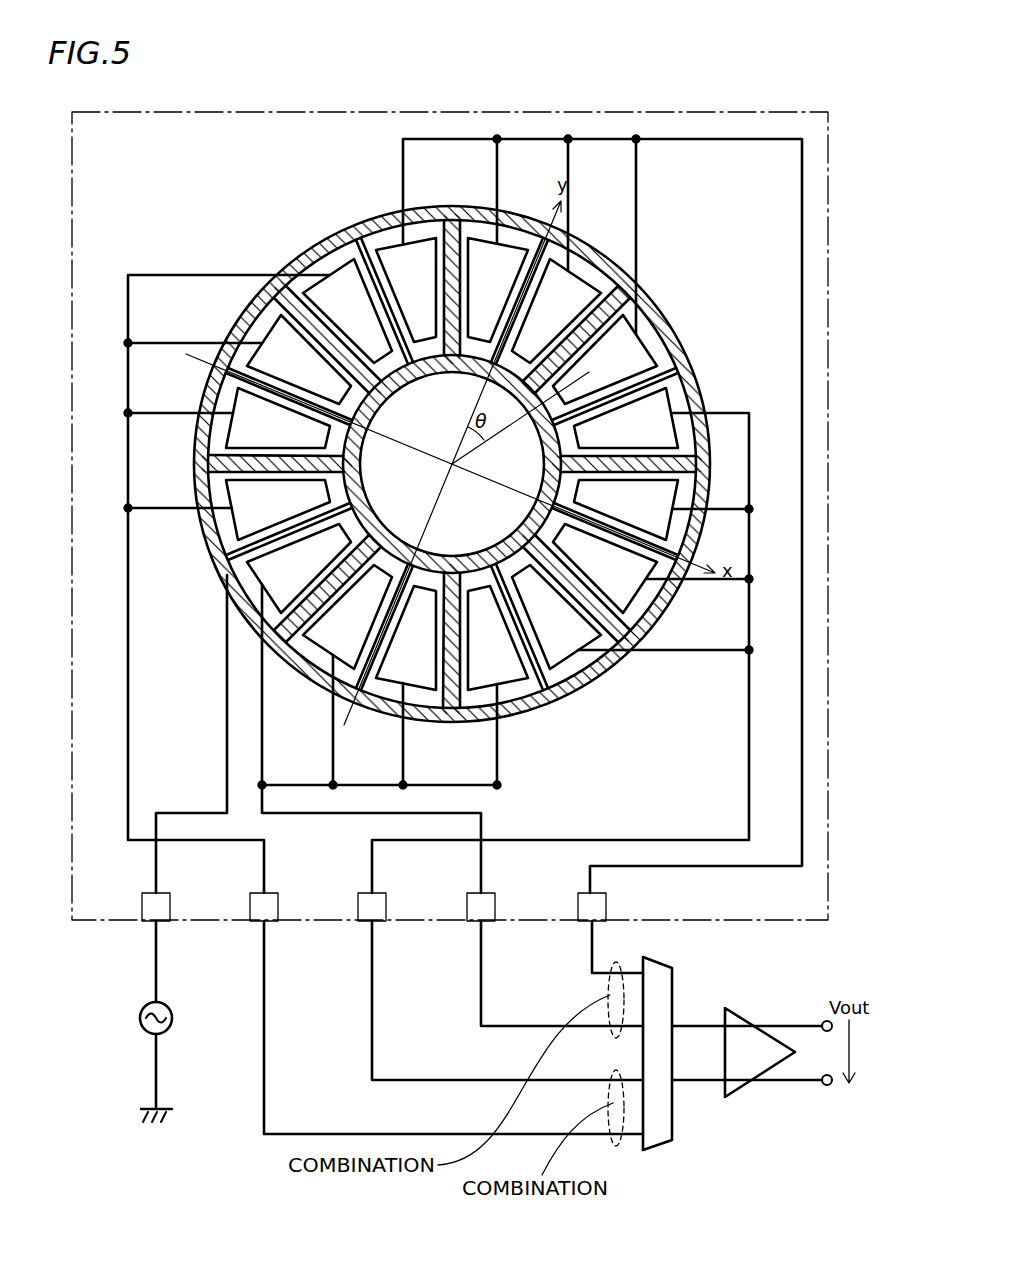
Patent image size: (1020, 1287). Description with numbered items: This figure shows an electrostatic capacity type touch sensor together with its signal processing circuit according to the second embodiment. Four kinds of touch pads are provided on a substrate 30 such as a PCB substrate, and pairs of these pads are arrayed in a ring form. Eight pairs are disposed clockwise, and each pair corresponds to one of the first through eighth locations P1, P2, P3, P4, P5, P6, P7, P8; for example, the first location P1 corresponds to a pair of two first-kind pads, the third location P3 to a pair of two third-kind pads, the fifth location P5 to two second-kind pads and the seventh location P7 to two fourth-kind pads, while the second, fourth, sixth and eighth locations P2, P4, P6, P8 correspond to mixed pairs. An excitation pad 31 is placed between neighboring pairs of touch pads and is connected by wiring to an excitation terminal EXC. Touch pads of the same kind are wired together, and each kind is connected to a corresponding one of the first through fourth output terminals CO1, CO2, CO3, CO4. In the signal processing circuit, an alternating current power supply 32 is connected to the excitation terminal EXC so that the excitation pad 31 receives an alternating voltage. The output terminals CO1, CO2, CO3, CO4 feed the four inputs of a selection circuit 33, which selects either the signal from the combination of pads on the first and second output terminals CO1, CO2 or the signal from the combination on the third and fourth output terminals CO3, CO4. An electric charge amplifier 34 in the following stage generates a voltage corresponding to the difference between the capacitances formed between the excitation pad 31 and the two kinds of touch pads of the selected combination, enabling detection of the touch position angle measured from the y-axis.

The substrate 30 is at (660, 118).
The excitation pad 31 is at (662, 305).
The alternating current power supply 32 is at (174, 1019).
The selection circuit 33 is at (660, 1139).
The electric charge amplifier 34 is at (743, 1086).
The first location P1 is at (545, 249).
The second location P2 is at (670, 378).
The third location P3 is at (667, 557).
The fourth location P4 is at (538, 682).
The fifth location P5 is at (359, 679).
The sixth location P6 is at (234, 550).
The seventh location P7 is at (237, 371).
The eighth location P8 is at (366, 246).
The excitation terminal EXC is at (171, 892).
The first output terminal CO1 is at (607, 892).
The second output terminal CO2 is at (496, 892).
The third output terminal CO3 is at (387, 892).
The fourth output terminal CO4 is at (279, 892).